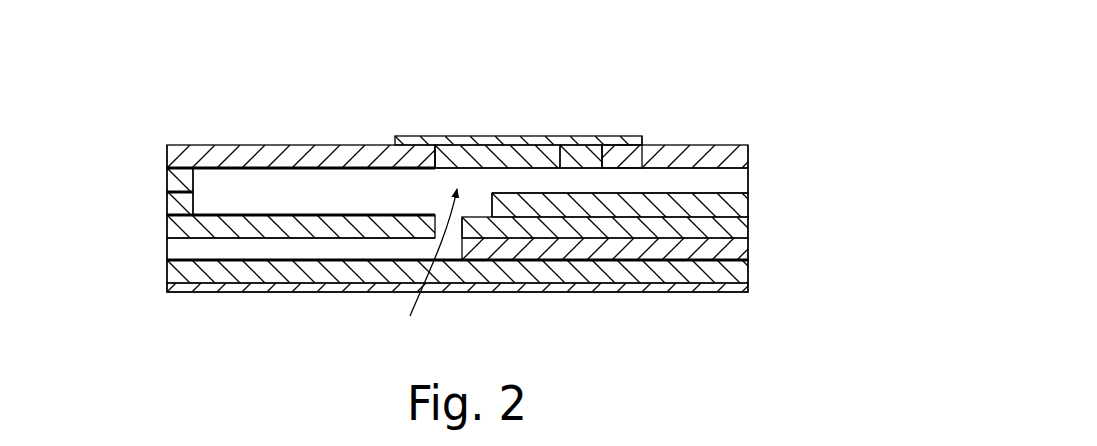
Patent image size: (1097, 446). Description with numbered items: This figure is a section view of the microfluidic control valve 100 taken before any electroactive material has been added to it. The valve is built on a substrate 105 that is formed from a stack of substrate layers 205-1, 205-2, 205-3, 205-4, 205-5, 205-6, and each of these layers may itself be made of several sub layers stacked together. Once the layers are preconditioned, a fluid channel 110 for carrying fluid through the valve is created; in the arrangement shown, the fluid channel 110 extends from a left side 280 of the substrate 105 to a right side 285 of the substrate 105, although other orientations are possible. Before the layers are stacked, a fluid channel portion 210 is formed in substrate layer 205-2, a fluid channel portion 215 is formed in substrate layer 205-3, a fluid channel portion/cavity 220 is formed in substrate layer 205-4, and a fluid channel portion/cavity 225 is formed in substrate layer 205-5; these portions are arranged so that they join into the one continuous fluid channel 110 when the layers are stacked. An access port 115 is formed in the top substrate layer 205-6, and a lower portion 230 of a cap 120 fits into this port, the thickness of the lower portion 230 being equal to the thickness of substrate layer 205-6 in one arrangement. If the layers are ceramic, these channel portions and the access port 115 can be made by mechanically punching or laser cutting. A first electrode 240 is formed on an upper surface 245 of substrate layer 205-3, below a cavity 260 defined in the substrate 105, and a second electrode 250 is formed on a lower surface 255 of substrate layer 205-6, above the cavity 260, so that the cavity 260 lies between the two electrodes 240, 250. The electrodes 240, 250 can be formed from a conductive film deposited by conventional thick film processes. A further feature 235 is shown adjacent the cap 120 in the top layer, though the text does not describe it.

The MEMS microphone device 100 is at (372, 96).
The substrate 105 is at (738, 131).
The fluid channel 110 is at (172, 249).
The access port 115 is at (424, 264).
The cap 120 is at (515, 137).
The substrate layer 205-1 is at (748, 275).
The substrate layer 205-2 is at (748, 250).
The substrate layer 205-3 is at (748, 228).
The substrate layer 205-4 is at (748, 205).
The substrate layer 205-5 is at (748, 183).
The substrate layer 205-6 is at (748, 157).
The fluid channel portion 210 is at (347, 250).
The fluid channel portion 215 is at (455, 228).
The fluid channel portion/cavity 220 is at (480, 203).
The fluid channel portion/cavity 225 is at (625, 183).
The lower portion of the cap 230 is at (562, 167).
The bond pad 235 is at (628, 167).
The first electrode 240 is at (172, 215).
The upper surface 245 is at (178, 226).
The second electrode 250 is at (170, 168).
The lower surface 255 is at (172, 166).
The cavity 260 is at (214, 193).
The left side 280 is at (167, 265).
The right side 285 is at (748, 283).